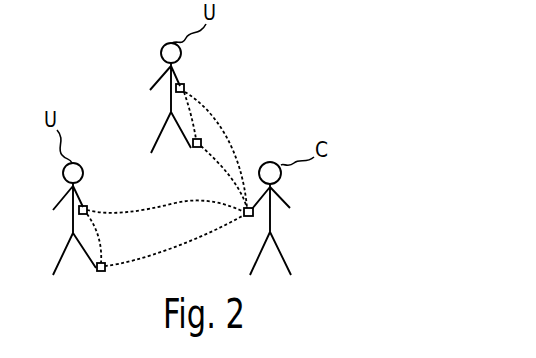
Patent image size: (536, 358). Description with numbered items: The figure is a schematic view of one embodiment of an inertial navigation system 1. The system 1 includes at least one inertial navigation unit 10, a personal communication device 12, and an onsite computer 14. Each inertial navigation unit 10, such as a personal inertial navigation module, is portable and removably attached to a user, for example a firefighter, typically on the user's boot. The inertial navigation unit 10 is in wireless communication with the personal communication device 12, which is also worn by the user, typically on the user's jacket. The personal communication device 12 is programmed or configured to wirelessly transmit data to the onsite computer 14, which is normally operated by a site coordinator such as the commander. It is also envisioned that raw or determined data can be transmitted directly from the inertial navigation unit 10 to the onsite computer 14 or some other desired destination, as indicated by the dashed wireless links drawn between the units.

The inertial navigation system 1 is at (270, 69).
The inertial navigation unit 10 is at (197, 148).
The personal communication device 12 is at (184, 86).
The onsite computer 14 is at (247, 217).